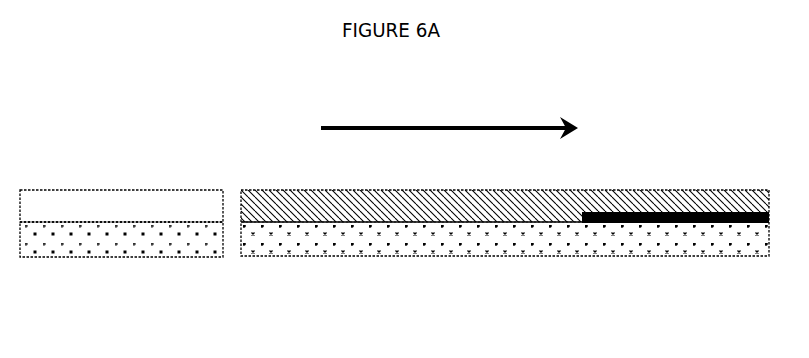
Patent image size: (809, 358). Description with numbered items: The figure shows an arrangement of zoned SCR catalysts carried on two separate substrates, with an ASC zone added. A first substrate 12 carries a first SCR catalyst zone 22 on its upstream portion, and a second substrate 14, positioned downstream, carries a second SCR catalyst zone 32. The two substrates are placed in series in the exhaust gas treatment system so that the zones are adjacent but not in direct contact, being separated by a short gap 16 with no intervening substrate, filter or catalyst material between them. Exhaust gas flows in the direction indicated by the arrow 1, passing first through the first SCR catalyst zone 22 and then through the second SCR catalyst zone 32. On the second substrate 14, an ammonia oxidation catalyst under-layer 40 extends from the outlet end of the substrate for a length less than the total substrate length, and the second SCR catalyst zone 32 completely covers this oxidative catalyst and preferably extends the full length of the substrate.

The processing direction arrow 1 is at (363, 125).
The first substrate 12 is at (145, 237).
The second substrate 14 is at (392, 235).
The gap 16 is at (236, 238).
The first layer 22 is at (168, 207).
The coating layer 32 is at (542, 212).
The ammonia oxidation catalyst under-layer 40 is at (733, 212).